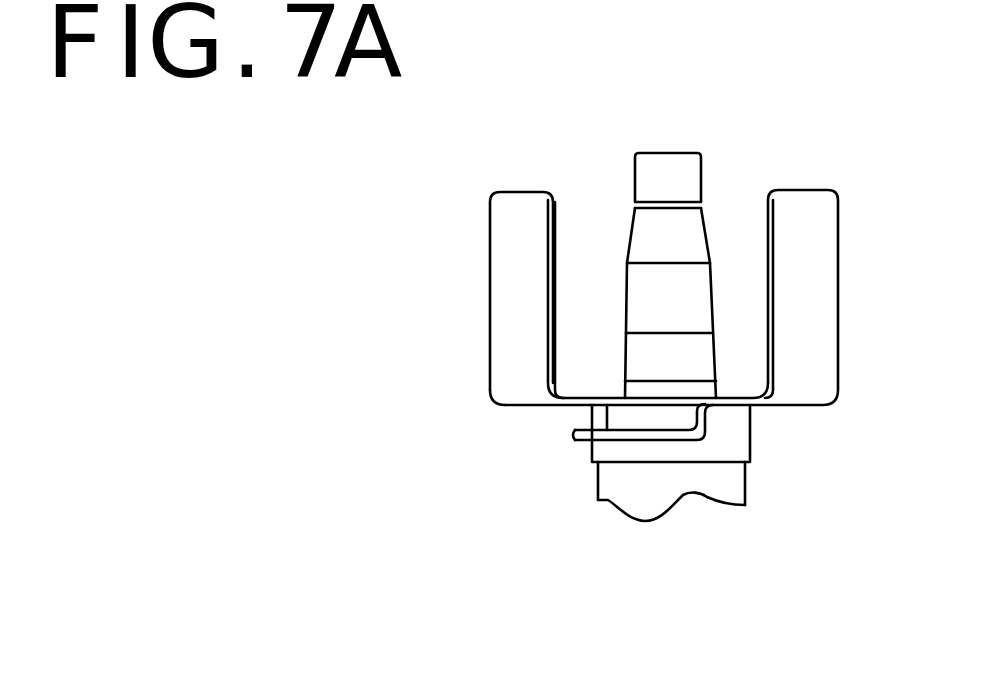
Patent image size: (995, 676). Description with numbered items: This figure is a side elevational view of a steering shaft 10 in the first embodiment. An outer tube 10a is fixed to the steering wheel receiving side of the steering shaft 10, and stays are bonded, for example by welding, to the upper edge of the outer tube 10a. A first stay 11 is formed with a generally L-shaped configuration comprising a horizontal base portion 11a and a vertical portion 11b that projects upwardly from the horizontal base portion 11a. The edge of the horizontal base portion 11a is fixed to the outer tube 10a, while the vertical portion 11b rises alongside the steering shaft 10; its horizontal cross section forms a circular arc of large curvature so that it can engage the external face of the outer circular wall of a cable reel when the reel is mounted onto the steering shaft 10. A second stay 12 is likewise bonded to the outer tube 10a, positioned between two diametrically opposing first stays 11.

The steering shaft 10 is at (700, 308).
The outer tube 10a is at (757, 433).
The first stay 11 is at (620, 297).
The horizontal base portion 11a is at (560, 395).
The vertical portion 11b is at (500, 262).
The second stay 12 is at (627, 405).